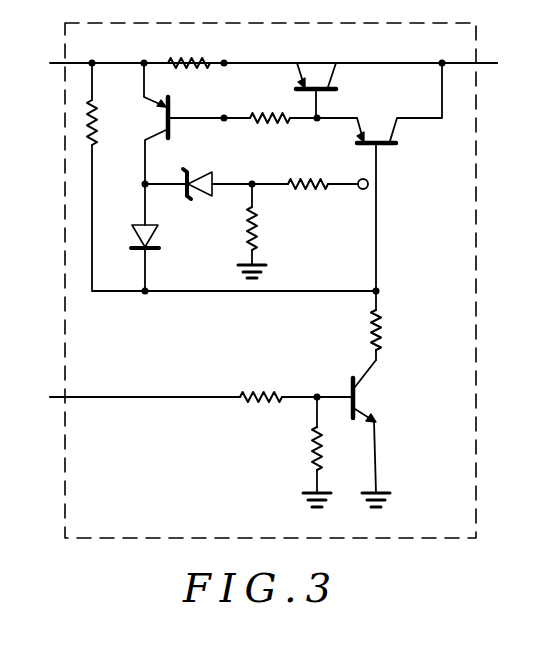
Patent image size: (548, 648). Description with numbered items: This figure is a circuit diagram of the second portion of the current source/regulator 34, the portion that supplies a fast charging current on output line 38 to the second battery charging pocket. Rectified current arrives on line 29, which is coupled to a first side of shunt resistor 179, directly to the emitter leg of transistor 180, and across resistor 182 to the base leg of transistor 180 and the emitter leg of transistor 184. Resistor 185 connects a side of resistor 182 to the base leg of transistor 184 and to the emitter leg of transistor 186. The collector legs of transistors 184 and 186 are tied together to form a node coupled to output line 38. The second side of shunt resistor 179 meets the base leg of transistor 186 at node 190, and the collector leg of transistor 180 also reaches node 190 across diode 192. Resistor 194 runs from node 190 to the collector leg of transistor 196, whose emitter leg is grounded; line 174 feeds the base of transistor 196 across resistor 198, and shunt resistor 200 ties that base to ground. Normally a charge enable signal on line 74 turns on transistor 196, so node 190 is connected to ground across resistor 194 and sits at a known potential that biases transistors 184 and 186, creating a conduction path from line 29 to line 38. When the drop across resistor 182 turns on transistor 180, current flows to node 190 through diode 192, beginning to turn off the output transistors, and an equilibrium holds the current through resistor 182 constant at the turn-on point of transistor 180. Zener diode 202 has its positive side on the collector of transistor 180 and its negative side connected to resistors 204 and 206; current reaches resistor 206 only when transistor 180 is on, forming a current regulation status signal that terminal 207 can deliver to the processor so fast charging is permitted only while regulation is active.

The line 29 is at (52, 63).
The current source/regulator 34 is at (340, 23).
The output line 38 is at (482, 67).
The line 74 is at (53, 400).
The line 174 is at (162, 396).
The shunt resistor 179 is at (100, 104).
The transistor 180 is at (172, 99).
The resistor 182 is at (197, 58).
The transistor 184 is at (335, 66).
The resistor 185 is at (285, 112).
The transistor 186 is at (390, 146).
The node 190 is at (232, 291).
The diode 192 is at (145, 222).
The resistor 194 is at (379, 344).
The transistor 196 is at (352, 380).
The resistor 198 is at (242, 396).
The shunt resistor 200 is at (313, 450).
The zener diode 202 is at (204, 174).
The resistor 204 is at (254, 236).
The resistor 206 is at (291, 181).
The terminal 207 is at (360, 178).